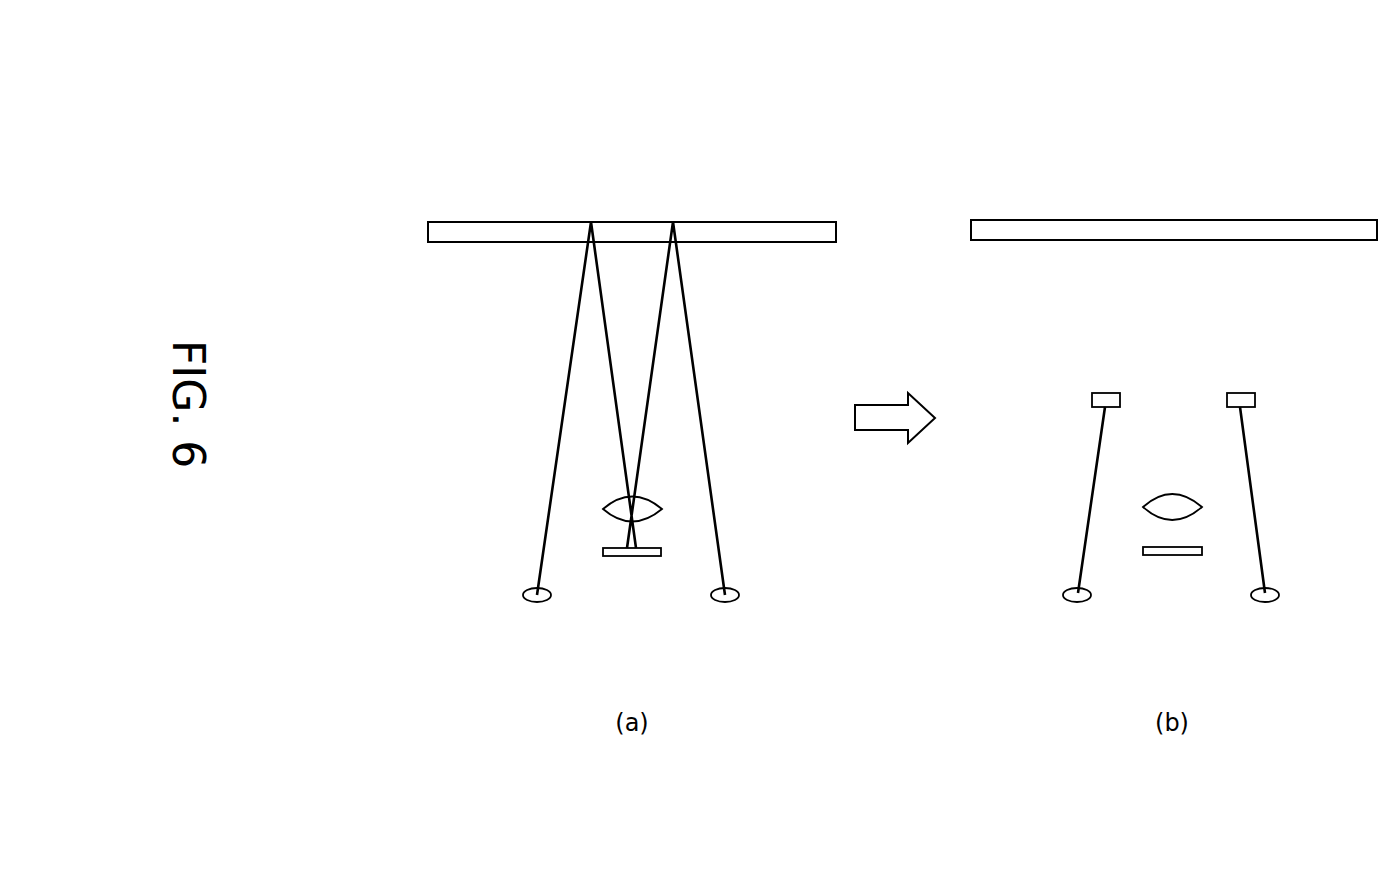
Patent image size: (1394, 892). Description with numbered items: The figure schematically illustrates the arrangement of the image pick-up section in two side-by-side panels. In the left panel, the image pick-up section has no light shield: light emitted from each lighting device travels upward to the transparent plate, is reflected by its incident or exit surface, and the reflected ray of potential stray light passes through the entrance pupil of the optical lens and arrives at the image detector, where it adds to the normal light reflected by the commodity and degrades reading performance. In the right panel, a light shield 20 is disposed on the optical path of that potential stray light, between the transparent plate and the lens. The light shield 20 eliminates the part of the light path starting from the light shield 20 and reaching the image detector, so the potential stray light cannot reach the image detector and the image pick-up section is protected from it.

The light shield 20 is at (1092, 400).